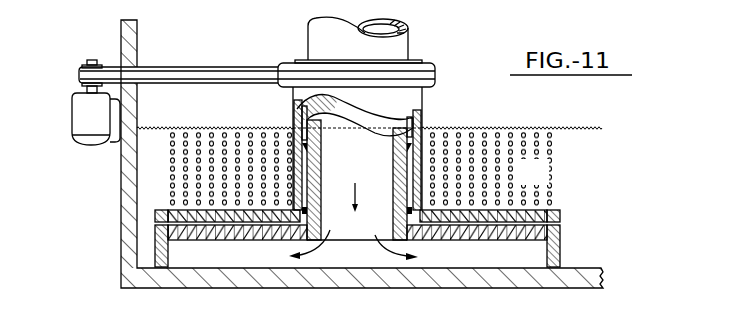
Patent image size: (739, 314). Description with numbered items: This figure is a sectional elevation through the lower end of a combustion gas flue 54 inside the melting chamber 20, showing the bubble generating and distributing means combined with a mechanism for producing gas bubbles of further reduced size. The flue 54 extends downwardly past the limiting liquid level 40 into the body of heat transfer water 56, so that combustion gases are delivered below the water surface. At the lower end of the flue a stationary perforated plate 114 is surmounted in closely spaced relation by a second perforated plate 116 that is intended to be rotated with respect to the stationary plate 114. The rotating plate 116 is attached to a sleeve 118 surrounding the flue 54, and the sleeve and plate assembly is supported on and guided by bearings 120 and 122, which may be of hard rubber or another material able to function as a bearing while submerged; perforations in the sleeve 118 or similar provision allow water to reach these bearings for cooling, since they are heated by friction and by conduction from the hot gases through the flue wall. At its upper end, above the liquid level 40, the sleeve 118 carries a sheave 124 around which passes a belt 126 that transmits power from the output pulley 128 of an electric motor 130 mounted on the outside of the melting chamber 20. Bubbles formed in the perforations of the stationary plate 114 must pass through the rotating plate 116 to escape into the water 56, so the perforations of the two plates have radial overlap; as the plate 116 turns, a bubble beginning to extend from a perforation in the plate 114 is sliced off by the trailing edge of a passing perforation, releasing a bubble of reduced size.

The melting chamber 20 is at (591, 276).
The limiting liquid level 40 is at (484, 127).
The flue 54 is at (294, 188).
The heat transfer water 56 is at (545, 182).
The stationary perforated plate 114 is at (561, 243).
The second perforated plate 116 is at (559, 212).
The sleeve 118 is at (294, 160).
The bearing 120 is at (423, 211).
The bearing 122 is at (416, 156).
The sheave 124 is at (430, 64).
The belt 126 is at (241, 72).
The output pulley 128 is at (84, 63).
The electric motor 130 is at (78, 115).